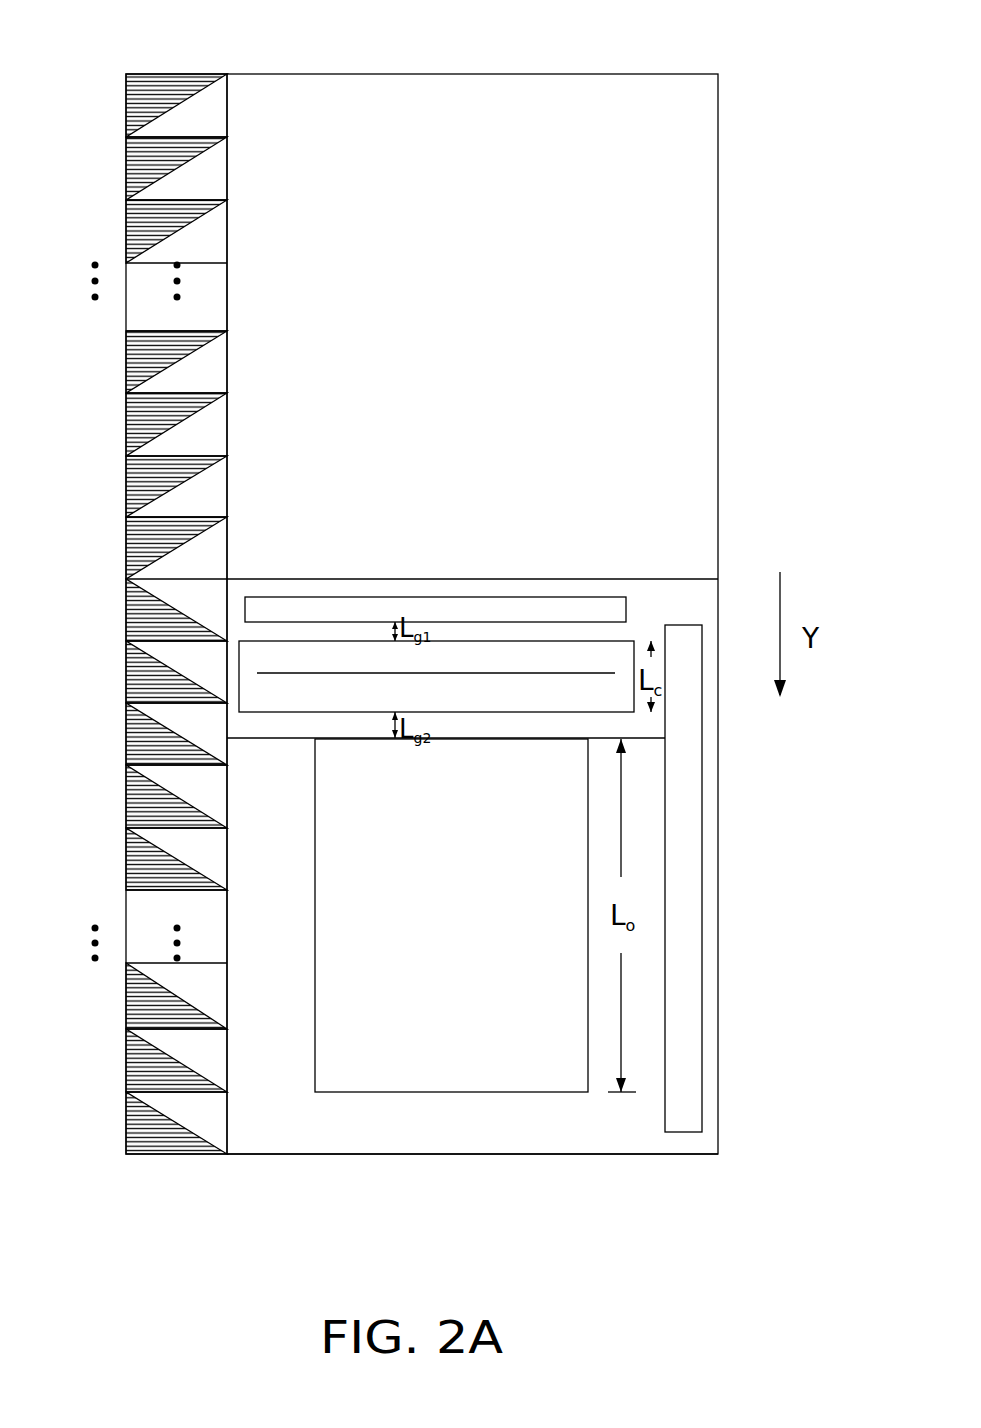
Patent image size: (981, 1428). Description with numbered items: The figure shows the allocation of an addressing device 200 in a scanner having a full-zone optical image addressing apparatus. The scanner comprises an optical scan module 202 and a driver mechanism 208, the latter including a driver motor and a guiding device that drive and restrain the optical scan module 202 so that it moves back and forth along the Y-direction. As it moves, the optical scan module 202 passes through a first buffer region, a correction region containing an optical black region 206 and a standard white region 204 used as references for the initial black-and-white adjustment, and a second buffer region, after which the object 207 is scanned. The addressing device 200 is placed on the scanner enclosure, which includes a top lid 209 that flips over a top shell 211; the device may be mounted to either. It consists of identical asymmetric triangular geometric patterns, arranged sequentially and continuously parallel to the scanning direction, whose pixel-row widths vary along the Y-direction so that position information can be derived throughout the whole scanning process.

The addressing device 200 is at (183, 73).
The optical scan module 202 is at (572, 597).
The standard white region 204 is at (605, 641).
The optical black region 206 is at (513, 673).
The object 207 is at (427, 918).
The driver mechanism 208 is at (703, 928).
The top lid 209 is at (695, 327).
The top shell 211 is at (504, 1154).